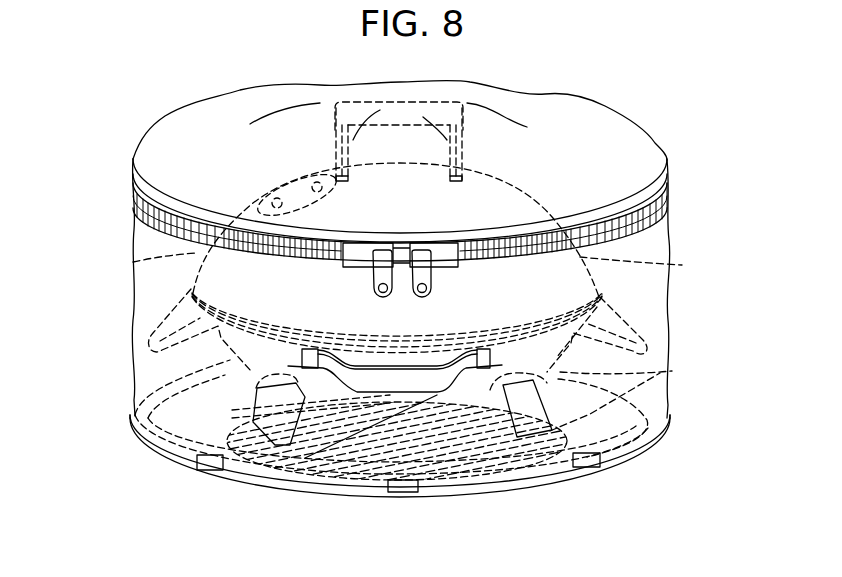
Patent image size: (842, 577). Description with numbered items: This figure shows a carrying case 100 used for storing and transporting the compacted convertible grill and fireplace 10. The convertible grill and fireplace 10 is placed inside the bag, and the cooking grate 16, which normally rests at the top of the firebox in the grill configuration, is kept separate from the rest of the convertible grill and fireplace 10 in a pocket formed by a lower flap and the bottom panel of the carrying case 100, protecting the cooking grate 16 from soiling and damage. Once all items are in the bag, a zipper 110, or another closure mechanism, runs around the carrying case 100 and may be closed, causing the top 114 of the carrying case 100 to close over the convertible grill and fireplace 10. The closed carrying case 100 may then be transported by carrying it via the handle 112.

The carrying case 100 is at (662, 120).
The top 114 is at (590, 167).
The zipper 110 is at (155, 222).
The convertible grill and fireplace 10 is at (665, 262).
The handle 112 is at (392, 380).
The cooking grate 16 is at (655, 372).